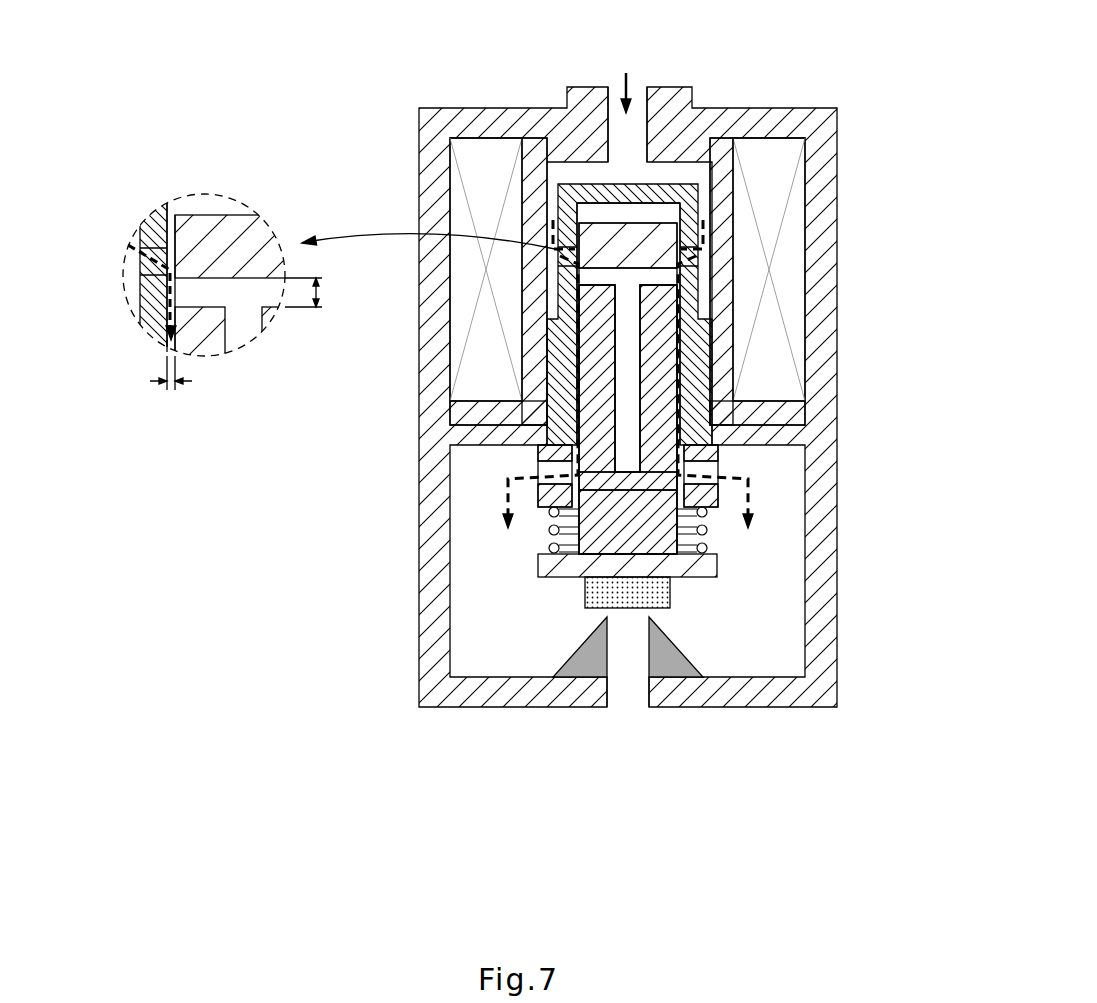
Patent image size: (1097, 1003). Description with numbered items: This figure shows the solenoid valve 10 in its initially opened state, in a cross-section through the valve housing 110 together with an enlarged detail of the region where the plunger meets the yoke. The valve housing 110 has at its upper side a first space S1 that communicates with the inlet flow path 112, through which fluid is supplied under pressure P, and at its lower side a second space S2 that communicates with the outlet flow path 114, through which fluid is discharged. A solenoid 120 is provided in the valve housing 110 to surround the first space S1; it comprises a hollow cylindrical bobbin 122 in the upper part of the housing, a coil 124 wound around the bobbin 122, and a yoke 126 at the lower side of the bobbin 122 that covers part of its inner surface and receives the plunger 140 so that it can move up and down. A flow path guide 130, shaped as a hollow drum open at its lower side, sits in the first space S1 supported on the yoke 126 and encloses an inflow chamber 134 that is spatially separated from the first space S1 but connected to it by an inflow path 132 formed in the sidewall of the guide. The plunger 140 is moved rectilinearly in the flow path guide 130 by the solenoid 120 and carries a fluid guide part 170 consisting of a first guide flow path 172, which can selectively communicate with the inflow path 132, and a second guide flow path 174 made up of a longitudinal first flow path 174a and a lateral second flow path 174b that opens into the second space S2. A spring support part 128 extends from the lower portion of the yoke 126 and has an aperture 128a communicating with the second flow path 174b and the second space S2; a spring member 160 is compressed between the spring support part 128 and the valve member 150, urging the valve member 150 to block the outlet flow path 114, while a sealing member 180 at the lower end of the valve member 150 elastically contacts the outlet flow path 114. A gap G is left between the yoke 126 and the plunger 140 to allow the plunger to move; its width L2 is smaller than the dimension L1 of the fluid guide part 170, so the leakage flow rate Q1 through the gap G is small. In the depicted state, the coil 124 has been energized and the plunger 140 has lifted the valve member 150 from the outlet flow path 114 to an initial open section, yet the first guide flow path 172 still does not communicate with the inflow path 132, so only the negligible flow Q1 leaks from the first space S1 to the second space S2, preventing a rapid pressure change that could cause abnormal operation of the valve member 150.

The solenoid valve 10 is at (436, 25).
The valve housing 110 is at (445, 125).
The inlet flow path 112 is at (637, 112).
The outlet flow path 114 is at (627, 690).
The solenoid 120 is at (902, 275).
The bobbin 122 is at (712, 287).
The coil 124 is at (765, 318).
The yoke 126 is at (700, 343).
The spring support part 128 is at (705, 497).
The aperture 128a is at (695, 470).
The flow path guide 130 is at (558, 207).
The inflow path 132 is at (575, 256).
The inflow chamber 134 is at (597, 213).
The plunger 140 is at (663, 243).
The valve member 150 is at (700, 568).
The spring member 160 is at (710, 530).
The fluid guide part 170 is at (690, 260).
The first guide flow path 172 is at (578, 290).
The second guide flow path 174 is at (340, 370).
The first flow path 174a is at (613, 392).
The second flow path 174b is at (575, 460).
The sealing member 180 is at (660, 592).
The pressure P is at (626, 82).
The flow rate Q1 is at (508, 508).
The first space S1 is at (664, 172).
The second space S2 is at (540, 541).
The cross-sectional dimension of fluid guide part L1 is at (314, 292).
The cross-sectional dimension of gap L2 is at (171, 384).
The gap G is at (166, 346).